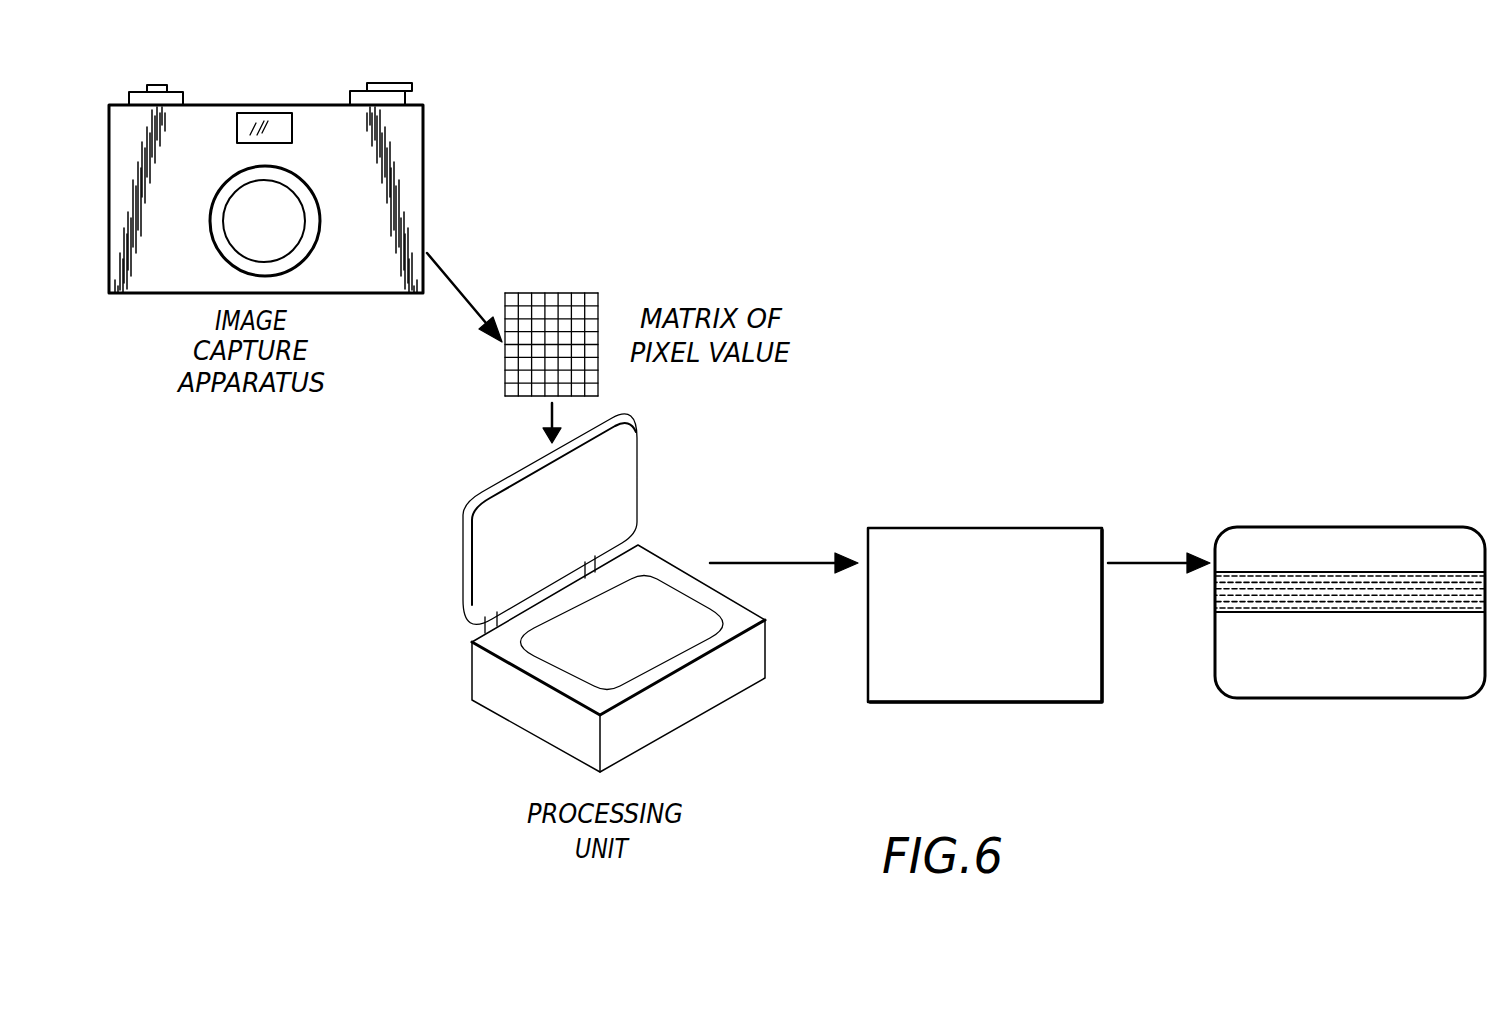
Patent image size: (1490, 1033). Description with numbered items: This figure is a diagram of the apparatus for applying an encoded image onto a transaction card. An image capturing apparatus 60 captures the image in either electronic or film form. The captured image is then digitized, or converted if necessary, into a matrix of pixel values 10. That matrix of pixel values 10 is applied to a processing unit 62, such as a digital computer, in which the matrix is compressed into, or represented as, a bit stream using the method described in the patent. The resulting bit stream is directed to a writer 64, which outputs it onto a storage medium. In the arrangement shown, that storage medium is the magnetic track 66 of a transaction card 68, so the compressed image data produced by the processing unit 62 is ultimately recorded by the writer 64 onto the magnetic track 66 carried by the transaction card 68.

The image capturing apparatus 60 is at (285, 105).
The matrix of pixel values 10 is at (555, 293).
The processing unit 62 is at (512, 725).
The writer 64 is at (963, 528).
The magnetic track 66 is at (1267, 572).
The transaction card 68 is at (1350, 580).